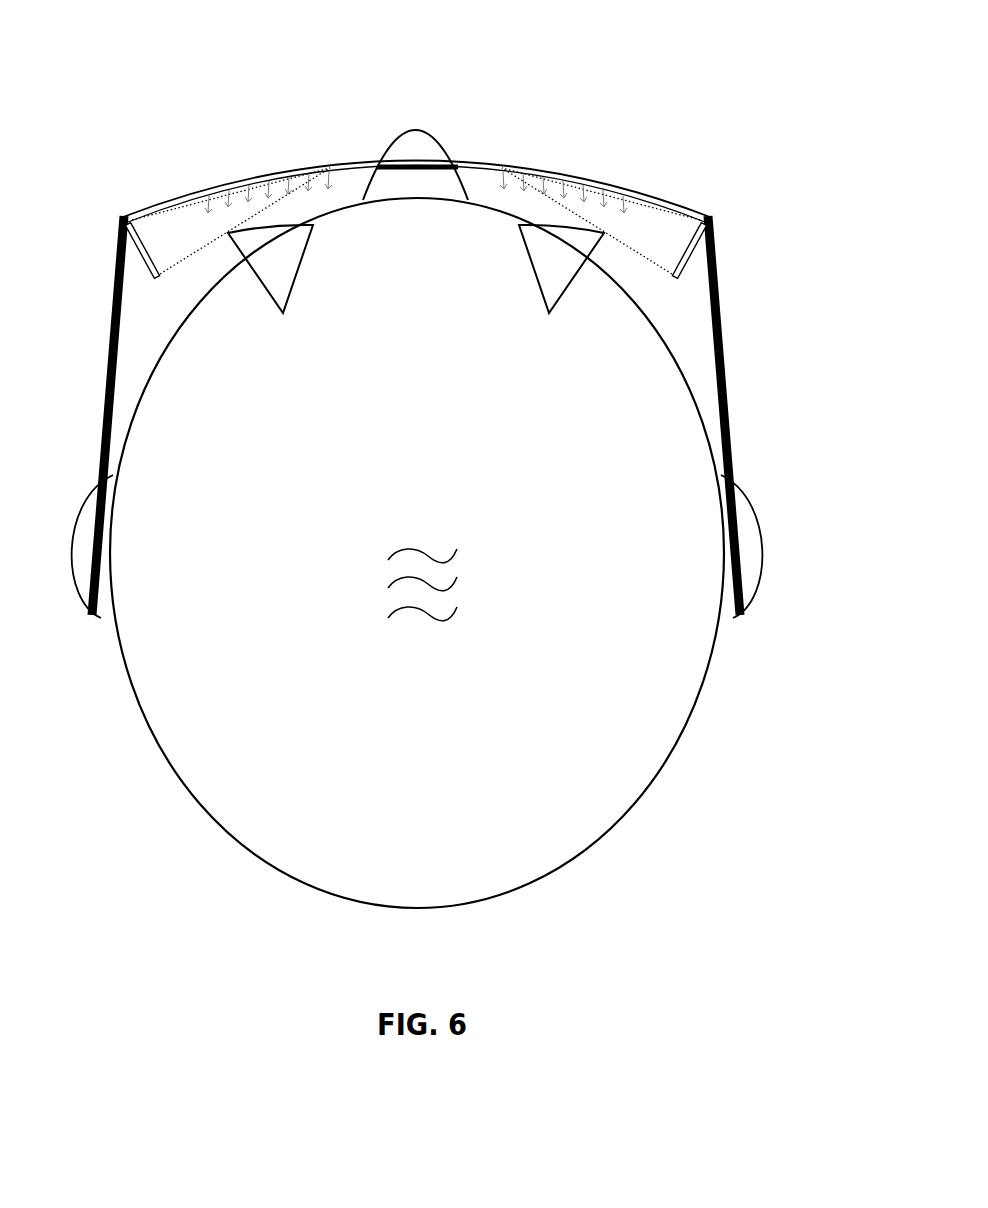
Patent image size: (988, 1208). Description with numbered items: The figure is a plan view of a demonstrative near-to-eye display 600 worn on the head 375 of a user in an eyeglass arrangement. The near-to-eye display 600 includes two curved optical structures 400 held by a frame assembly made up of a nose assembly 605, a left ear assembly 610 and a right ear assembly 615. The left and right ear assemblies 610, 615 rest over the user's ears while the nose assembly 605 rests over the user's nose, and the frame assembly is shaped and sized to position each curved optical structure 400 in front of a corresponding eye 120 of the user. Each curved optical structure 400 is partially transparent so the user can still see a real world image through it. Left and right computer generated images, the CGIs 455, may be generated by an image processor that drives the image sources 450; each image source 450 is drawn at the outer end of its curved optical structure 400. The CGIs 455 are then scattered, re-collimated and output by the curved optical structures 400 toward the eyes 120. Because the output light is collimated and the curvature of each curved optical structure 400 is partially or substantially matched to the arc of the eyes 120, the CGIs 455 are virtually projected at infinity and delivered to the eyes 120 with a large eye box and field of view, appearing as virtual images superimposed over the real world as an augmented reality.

The near-to-eye display 600 is at (624, 60).
The nose assembly 605 is at (432, 166).
The curved optical structure 400 is at (158, 200).
The image source 450 is at (142, 240).
The computer generated image (CGI) 455 is at (168, 274).
The eye 120 is at (291, 300).
The left ear assembly 610 is at (106, 413).
The right ear assembly 615 is at (728, 417).
The head 375 is at (434, 697).